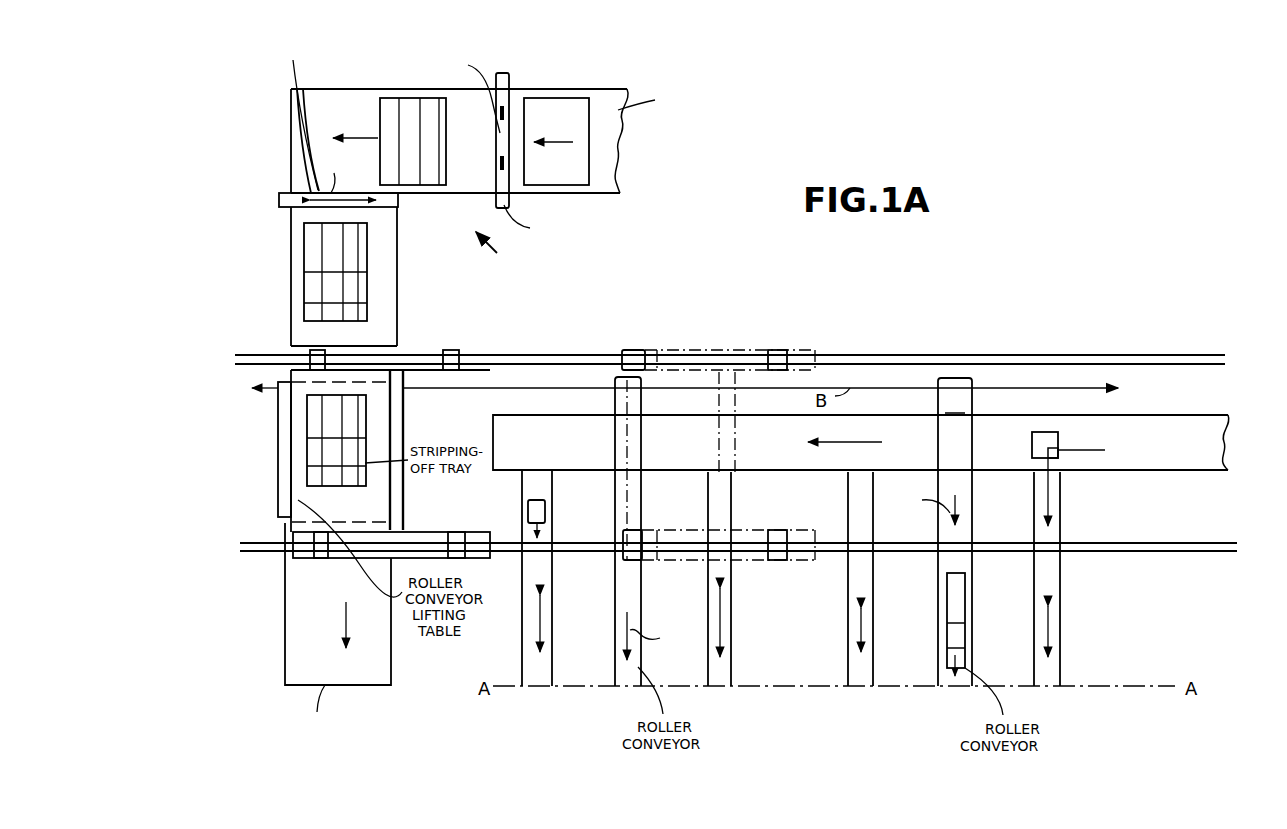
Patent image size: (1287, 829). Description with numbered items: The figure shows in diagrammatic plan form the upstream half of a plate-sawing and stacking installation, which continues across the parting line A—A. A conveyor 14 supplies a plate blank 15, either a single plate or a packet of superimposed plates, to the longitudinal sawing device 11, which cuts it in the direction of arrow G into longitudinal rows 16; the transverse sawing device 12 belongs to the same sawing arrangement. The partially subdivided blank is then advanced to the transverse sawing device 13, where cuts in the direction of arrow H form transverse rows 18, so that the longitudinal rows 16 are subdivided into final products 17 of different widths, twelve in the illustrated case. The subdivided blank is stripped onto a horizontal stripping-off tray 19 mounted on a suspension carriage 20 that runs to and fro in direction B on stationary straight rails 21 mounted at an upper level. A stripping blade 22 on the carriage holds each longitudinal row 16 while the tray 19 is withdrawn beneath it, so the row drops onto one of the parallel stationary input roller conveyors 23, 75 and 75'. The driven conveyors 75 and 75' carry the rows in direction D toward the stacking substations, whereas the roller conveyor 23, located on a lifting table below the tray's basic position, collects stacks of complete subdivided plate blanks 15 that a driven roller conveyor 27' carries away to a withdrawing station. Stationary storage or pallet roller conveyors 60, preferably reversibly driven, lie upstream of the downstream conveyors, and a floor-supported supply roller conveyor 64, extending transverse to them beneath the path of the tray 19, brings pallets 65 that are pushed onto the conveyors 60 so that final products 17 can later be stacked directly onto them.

The longitudinal sawing device 11 is at (497, 257).
The transverse sawing device 12 is at (504, 85).
The transverse sawing device 13 is at (303, 185).
The conveyor 14 is at (612, 133).
The plate blank 15 is at (574, 168).
The longitudinal rows 16 is at (406, 96).
The final products 17 is at (310, 290).
The transverse rows 18 is at (372, 311).
The stripping-off tray 19 is at (385, 500).
The suspension carriage 20 is at (478, 350).
The stationary straight rails 21 is at (1187, 358).
The stripping blade 22 is at (405, 505).
The input roller conveyor 23 is at (278, 505).
The driven roller conveyor 27' is at (358, 636).
The pallet and/or storage roller conveyor 60 is at (542, 570).
The supply roller conveyor 64 is at (1228, 452).
The pallets 65 is at (545, 510).
The input roller conveyor 75 is at (650, 531).
The input roller conveyor 75' is at (969, 532).